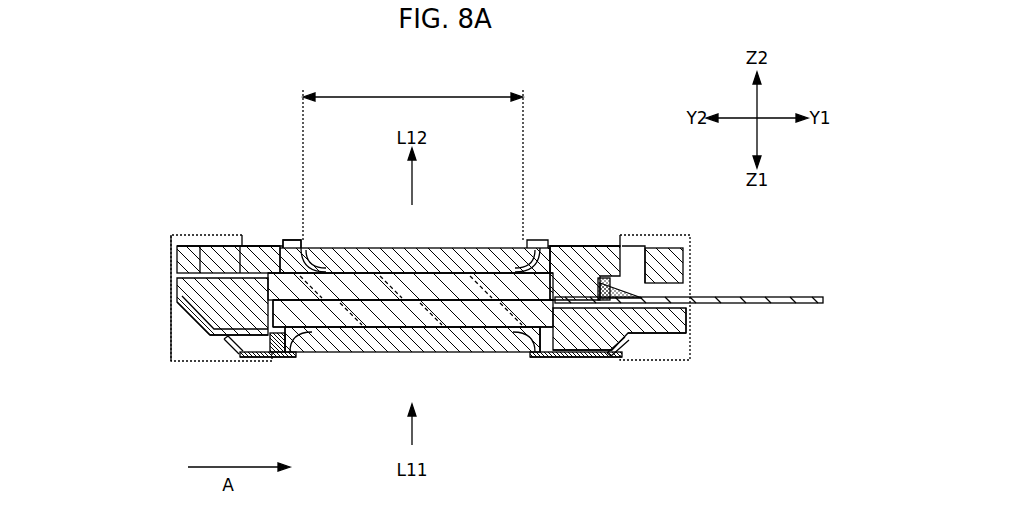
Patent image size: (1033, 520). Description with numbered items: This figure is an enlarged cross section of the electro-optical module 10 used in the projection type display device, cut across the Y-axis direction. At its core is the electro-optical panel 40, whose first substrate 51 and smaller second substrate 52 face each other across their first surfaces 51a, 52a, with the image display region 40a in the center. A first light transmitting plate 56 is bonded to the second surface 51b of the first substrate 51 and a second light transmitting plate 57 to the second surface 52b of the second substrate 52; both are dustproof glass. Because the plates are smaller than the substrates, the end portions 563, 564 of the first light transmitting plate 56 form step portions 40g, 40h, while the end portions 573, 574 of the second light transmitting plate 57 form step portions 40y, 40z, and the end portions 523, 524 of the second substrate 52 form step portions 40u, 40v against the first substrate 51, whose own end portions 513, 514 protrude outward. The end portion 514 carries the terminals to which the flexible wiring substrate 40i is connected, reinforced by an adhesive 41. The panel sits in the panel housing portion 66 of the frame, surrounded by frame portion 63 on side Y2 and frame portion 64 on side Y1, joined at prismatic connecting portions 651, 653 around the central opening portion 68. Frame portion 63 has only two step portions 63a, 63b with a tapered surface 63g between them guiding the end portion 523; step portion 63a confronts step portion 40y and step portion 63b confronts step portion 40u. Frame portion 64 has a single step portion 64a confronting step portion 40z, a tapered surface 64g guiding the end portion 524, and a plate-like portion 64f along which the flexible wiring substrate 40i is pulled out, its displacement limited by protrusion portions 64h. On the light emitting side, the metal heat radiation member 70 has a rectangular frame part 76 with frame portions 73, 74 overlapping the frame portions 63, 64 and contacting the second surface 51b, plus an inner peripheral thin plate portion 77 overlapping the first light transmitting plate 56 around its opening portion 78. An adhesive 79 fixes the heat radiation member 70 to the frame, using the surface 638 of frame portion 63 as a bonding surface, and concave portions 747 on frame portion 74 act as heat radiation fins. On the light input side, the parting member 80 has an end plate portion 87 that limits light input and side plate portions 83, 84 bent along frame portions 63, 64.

The electro-optical module 10 is at (636, 148).
The electro-optical panel 40 is at (410, 236).
The image display region 40a is at (413, 157).
The step portion 40g is at (318, 250).
The step portion 40h is at (490, 250).
The flexible wiring substrate 40i is at (775, 304).
The step portion 40u is at (330, 256).
The step portion 40v is at (482, 258).
The step portion 40y is at (310, 352).
The step portion 40z is at (532, 350).
The adhesive 41 is at (623, 246).
The first substrate 51 is at (432, 270).
The first surface of first substrate 51a is at (446, 345).
The second surface of first substrate 51b is at (395, 280).
The second substrate 52 is at (462, 270).
The first surface of second substrate 52a is at (448, 330).
The second surface of second substrate 52b is at (388, 330).
The end portion of first substrate 513 is at (195, 310).
The end portion of first substrate 514 is at (603, 278).
The end portion of second substrate 523 is at (222, 350).
The end portion of second substrate 524 is at (612, 350).
The first light transmitting plate 56 is at (373, 250).
The end portion of first light transmitting plate 563 is at (254, 245).
The end portion of first light transmitting plate 564 is at (546, 250).
The second light transmitting plate 57 is at (412, 352).
The end portion of second light transmitting plate 573 is at (272, 357).
The end portion of second light transmitting plate 574 is at (560, 358).
The frame portion 63 is at (185, 295).
The step portion 63a is at (252, 356).
The step portion 63b is at (205, 325).
The tapered surface 63g is at (328, 345).
The surface of frame portion 638 is at (195, 270).
The frame portion 64 is at (688, 322).
The step portion 64a is at (585, 355).
The plate-like portion 64f is at (686, 358).
The tapered surface 64g is at (522, 333).
The protrusion portion 64h is at (642, 294).
The connecting portion 651 is at (172, 247).
The connecting portion 653 is at (692, 248).
The panel housing portion 66 is at (565, 255).
The opening portion 68 is at (292, 357).
The heat radiation member 70 is at (270, 232).
The frame portion 73 is at (205, 245).
The frame portion 74 is at (575, 247).
The rectangular frame part 76 is at (224, 200).
The inner peripheral thin plate portion 77 is at (530, 242).
The opening portion 78 is at (316, 242).
The adhesive 79 is at (226, 245).
The parting member 80 is at (541, 368).
The side plate portion 83 is at (240, 356).
The side plate portion 84 is at (655, 353).
The end plate portion 87 is at (552, 362).
The concave portion 747 is at (660, 247).